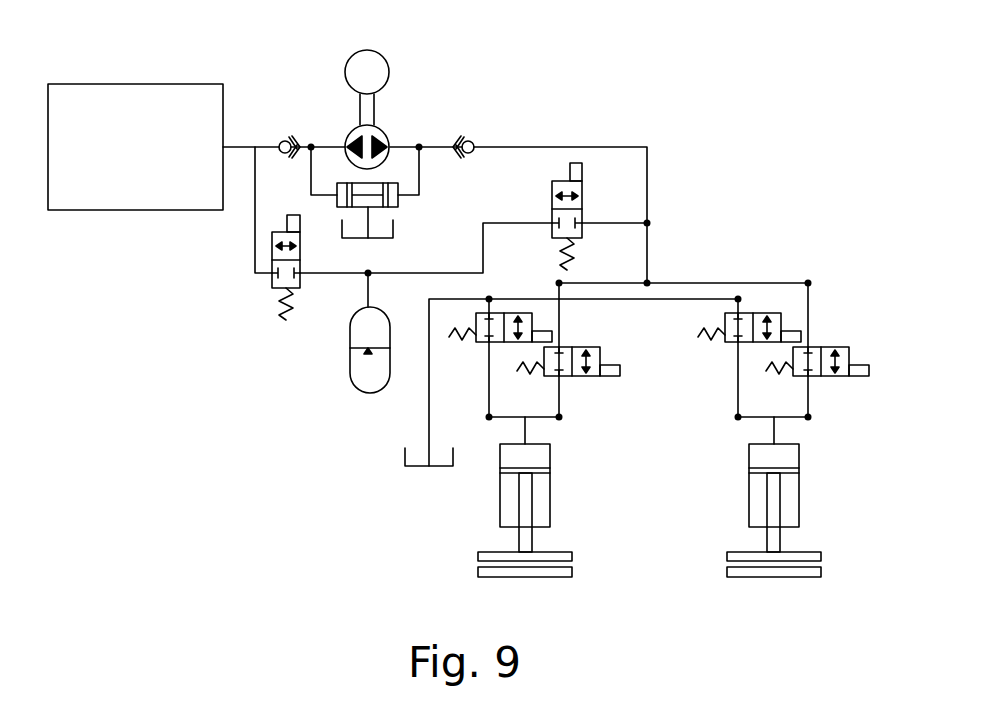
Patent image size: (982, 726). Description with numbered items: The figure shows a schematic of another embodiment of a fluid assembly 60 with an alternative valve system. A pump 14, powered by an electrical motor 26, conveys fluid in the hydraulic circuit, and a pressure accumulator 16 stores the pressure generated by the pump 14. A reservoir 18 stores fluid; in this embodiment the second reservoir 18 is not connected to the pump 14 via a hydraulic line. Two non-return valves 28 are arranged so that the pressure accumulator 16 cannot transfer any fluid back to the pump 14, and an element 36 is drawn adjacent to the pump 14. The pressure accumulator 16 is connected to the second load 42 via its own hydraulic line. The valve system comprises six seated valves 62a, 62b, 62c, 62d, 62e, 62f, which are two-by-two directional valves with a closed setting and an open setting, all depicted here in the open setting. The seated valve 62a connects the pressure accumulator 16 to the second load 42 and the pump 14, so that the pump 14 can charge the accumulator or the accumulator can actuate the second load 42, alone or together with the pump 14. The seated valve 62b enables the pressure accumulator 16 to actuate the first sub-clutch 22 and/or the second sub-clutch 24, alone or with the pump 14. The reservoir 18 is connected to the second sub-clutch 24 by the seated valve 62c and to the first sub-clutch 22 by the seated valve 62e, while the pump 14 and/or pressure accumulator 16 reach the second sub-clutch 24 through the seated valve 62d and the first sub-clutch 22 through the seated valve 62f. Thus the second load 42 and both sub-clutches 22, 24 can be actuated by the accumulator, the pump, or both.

The pump 14 is at (388, 133).
The pressure accumulator 16 is at (350, 362).
The reservoir 18 is at (342, 235).
The first sub-clutch 22 is at (726, 448).
The second sub-clutch 24 is at (580, 448).
The electrical motor 26 is at (382, 54).
The non-return valve 28 is at (283, 141).
The actuator of the pump 36 is at (337, 200).
The second load 42 is at (137, 210).
The fluid assembly 60 is at (205, 390).
The seated valve 62a is at (272, 282).
The seated valve 62b is at (583, 190).
The seated valve 62c is at (476, 342).
The seated valve 62d is at (590, 376).
The seated valve 62e is at (765, 313).
The seated valve 62f is at (835, 347).